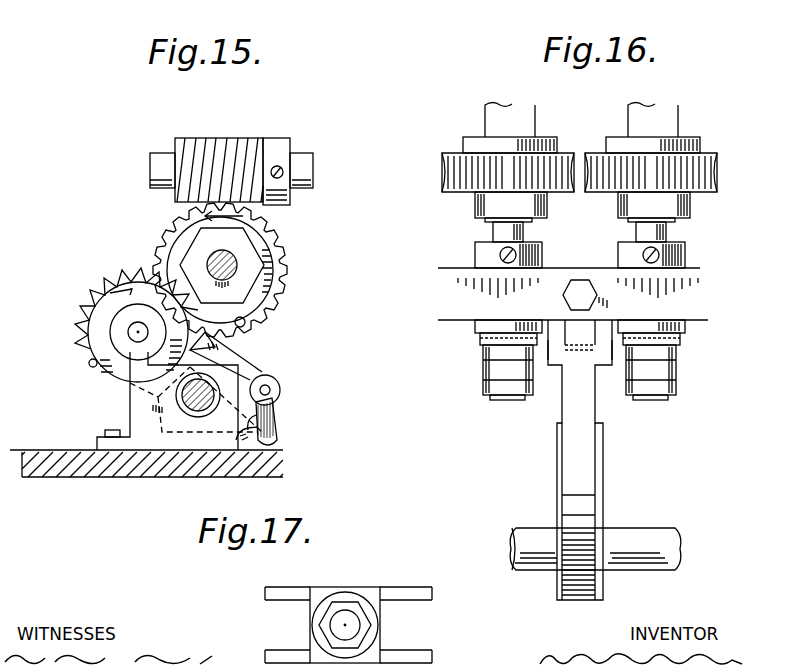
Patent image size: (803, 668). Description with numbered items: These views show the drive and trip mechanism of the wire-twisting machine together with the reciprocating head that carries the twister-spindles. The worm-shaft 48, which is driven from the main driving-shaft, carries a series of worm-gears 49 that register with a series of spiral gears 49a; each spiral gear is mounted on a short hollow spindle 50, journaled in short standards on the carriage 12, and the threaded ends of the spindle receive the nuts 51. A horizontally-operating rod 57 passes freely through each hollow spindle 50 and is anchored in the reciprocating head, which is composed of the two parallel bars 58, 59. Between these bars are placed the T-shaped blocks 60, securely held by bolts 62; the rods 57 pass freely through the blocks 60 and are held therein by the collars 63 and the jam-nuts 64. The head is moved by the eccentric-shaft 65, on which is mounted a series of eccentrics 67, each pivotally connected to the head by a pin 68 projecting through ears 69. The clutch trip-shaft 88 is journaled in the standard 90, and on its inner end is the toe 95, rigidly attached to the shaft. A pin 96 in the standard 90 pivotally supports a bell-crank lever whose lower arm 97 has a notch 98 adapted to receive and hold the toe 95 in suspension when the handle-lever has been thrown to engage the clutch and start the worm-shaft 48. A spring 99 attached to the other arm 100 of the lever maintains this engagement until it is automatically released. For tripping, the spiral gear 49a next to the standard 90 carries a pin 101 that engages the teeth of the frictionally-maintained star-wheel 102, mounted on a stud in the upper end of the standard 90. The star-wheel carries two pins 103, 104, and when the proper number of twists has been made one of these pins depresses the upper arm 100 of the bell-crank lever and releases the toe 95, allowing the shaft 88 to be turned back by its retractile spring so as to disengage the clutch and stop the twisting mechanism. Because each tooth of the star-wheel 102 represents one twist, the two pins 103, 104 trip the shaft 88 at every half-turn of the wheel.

In FIG. 15, the carriage 12 is at (54, 450).
In FIG. 15, the worm-shaft 48 is at (293, 156).
In FIG. 15, the worm-gear 49 is at (216, 131).
In FIG. 15, the spiral gear 49a is at (286, 262).
In FIG. 16, the spiral gear 49a is at (442, 170).
In FIG. 16, the hollow spindle 50 is at (689, 228).
In FIG. 15, the nut 51 is at (222, 265).
In FIG. 16, the nut 51 is at (616, 206).
In FIG. 15, the horizontally-operating rod 57 is at (211, 268).
In FIG. 16, the horizontally-operating rod 57 is at (526, 230).
In FIG. 16, the parallel bar 58 is at (573, 294).
In FIG. 17, the parallel bar 58 is at (348, 585).
In FIG. 17, the parallel bar 59 is at (420, 650).
In FIG. 16, the T-shaped block 60 is at (470, 326).
In FIG. 17, the T-shaped block 60 is at (366, 586).
In FIG. 16, the bolt 62 is at (594, 290).
In FIG. 16, the collar 63 is at (580, 255).
In FIG. 16, the jam-nut 64 is at (482, 368).
In FIG. 17, the jam-nut 64 is at (364, 626).
In FIG. 16, the eccentric-shaft 65 is at (595, 549).
In FIG. 16, the eccentric 67 is at (570, 598).
In FIG. 16, the pin 68 is at (556, 360).
In FIG. 16, the ear 69 is at (603, 372).
In FIG. 15, the shaft 88 is at (186, 410).
In FIG. 15, the standard 90 is at (130, 418).
In FIG. 15, the toe 95 is at (278, 426).
In FIG. 15, the pin 96 is at (270, 390).
In FIG. 15, the lower arm 97 is at (276, 413).
In FIG. 15, the notch 98 is at (268, 444).
In FIG. 15, the spring 99 is at (218, 342).
In FIG. 15, the upper arm 100 is at (250, 368).
In FIG. 15, the pin 101 is at (246, 322).
In FIG. 15, the star-wheel 102 is at (136, 325).
In FIG. 15, the pin 103 is at (185, 284).
In FIG. 15, the pin 104 is at (91, 366).